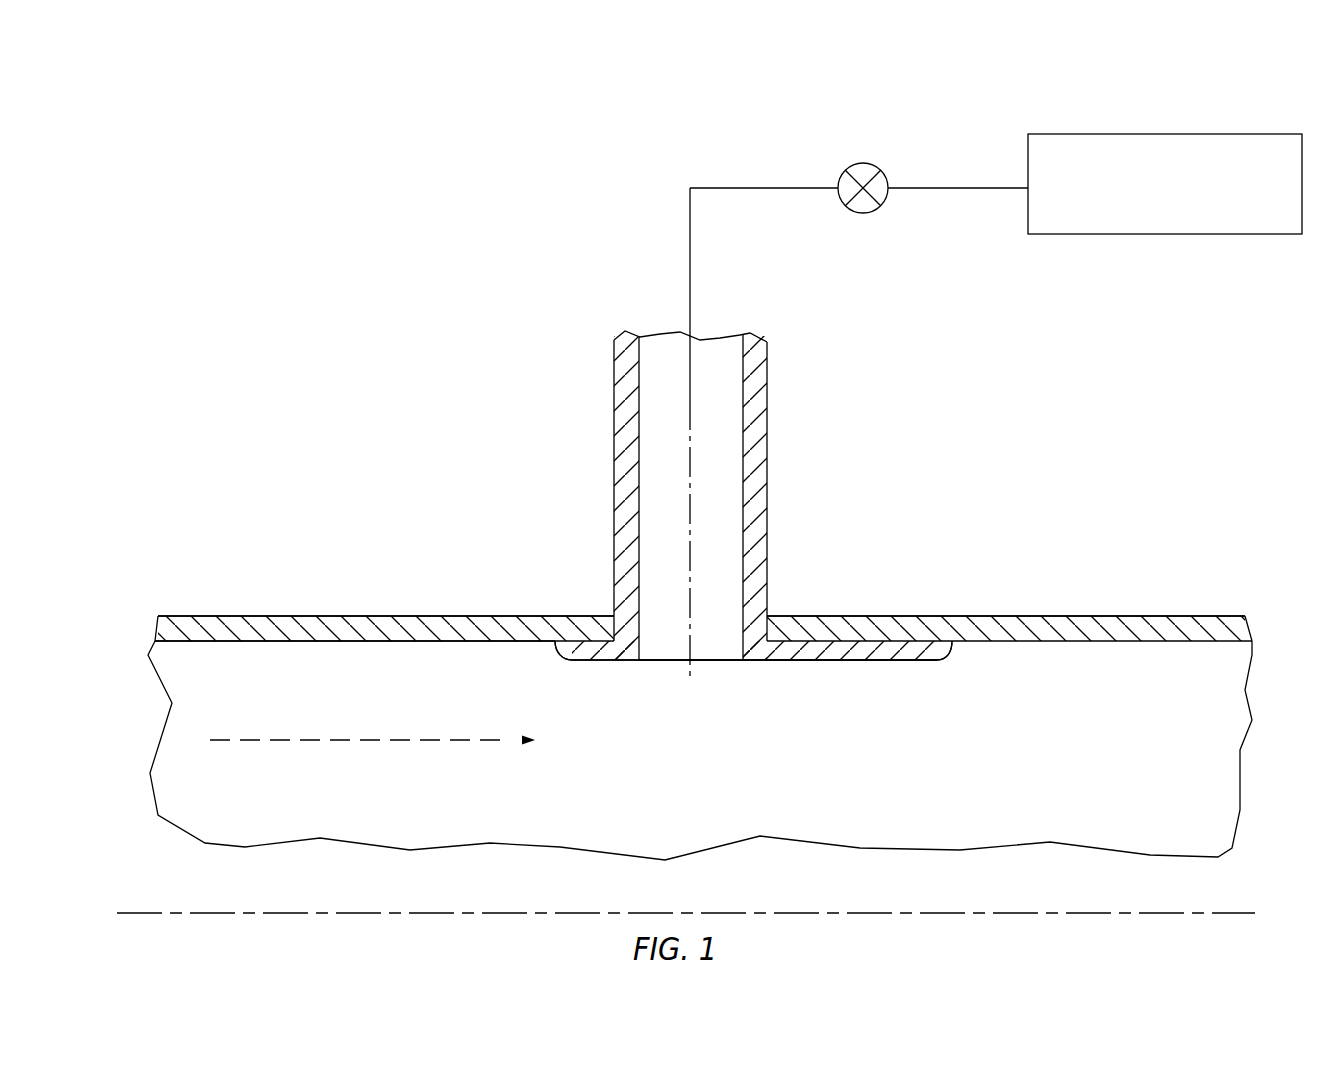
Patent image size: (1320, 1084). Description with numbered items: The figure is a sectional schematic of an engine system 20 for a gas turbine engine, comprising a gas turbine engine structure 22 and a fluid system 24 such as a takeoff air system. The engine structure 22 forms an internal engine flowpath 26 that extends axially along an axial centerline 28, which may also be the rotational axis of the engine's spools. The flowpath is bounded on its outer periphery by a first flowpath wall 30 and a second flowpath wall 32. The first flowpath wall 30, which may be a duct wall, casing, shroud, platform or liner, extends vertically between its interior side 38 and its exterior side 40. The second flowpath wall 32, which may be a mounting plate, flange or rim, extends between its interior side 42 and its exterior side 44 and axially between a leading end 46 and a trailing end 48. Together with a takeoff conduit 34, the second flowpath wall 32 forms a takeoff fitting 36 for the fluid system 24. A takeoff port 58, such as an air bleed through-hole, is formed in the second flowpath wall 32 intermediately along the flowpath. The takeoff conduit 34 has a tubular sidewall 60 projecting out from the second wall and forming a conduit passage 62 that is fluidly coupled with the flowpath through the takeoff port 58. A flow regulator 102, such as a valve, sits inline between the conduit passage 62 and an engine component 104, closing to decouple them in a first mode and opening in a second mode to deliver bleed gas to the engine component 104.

The engine system 20 is at (272, 226).
The gas turbine engine structure 22 is at (157, 578).
The fluid system 24 is at (645, 140).
The engine flowpath 26 is at (308, 803).
The axial centerline 28 is at (128, 912).
The first flowpath wall 30 is at (244, 605).
The second flowpath wall 32 is at (765, 692).
The takeoff conduit 34 is at (743, 464).
The takeoff fitting 36 is at (885, 532).
The interior side of first flowpath wall 38 is at (323, 641).
The exterior side of first flowpath wall 40 is at (323, 616).
The interior side of second flowpath wall 42 is at (926, 663).
The exterior side of second flowpath wall 44 is at (926, 640).
The leading end of second flowpath wall 46 is at (551, 648).
The trailing end of second flowpath wall 48 is at (956, 644).
The takeoff port 58 is at (727, 668).
The tubular sidewall 60 is at (750, 373).
The conduit passage 62 is at (672, 372).
The flow regulator 102 is at (880, 152).
The engine component 104 is at (1160, 124).